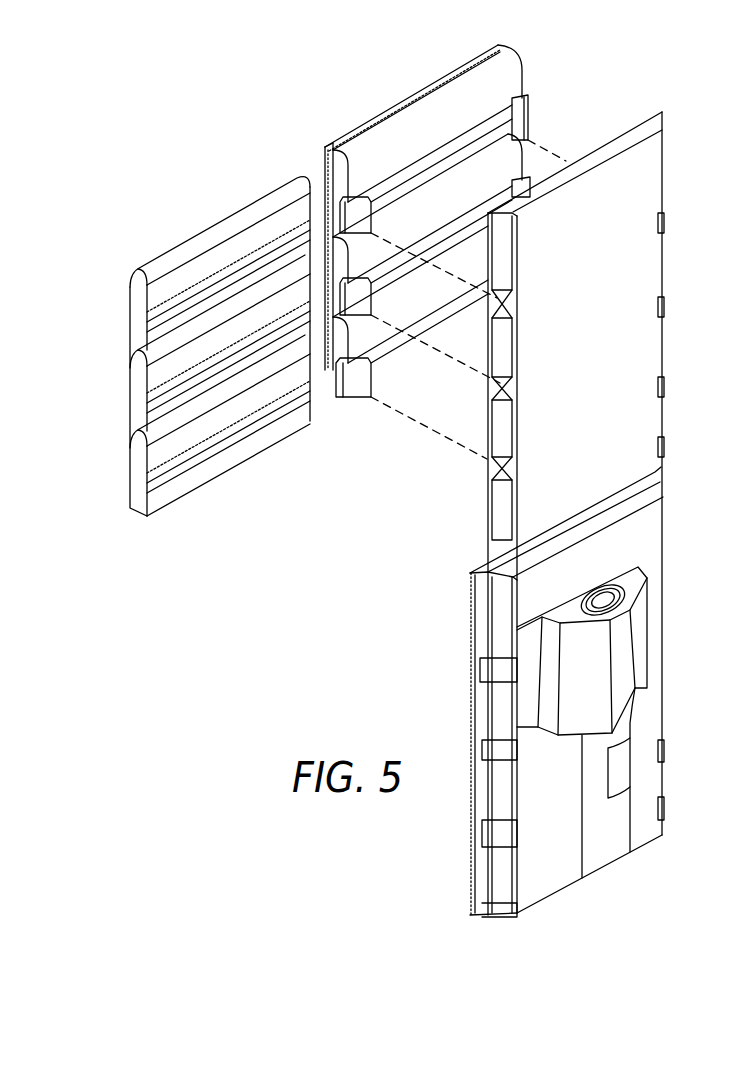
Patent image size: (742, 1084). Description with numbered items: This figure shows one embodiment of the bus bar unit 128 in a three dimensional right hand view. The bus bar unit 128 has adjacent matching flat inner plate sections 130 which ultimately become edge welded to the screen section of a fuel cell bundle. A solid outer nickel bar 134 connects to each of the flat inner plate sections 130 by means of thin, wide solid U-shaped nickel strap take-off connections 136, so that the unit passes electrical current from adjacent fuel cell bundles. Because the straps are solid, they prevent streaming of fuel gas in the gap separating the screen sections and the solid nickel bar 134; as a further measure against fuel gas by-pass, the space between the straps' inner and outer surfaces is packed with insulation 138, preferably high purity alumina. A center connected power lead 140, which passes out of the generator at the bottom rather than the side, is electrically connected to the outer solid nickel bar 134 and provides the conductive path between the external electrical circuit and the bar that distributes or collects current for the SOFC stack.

The bus bar unit 128 is at (424, 71).
The flat inner plate section 130 is at (346, 132).
The outer solid nickel bar 134 is at (642, 252).
The solid U-shaped nickel strap take-off connection 136 is at (515, 168).
The insulation 138 is at (137, 293).
The power lead 140 is at (620, 732).